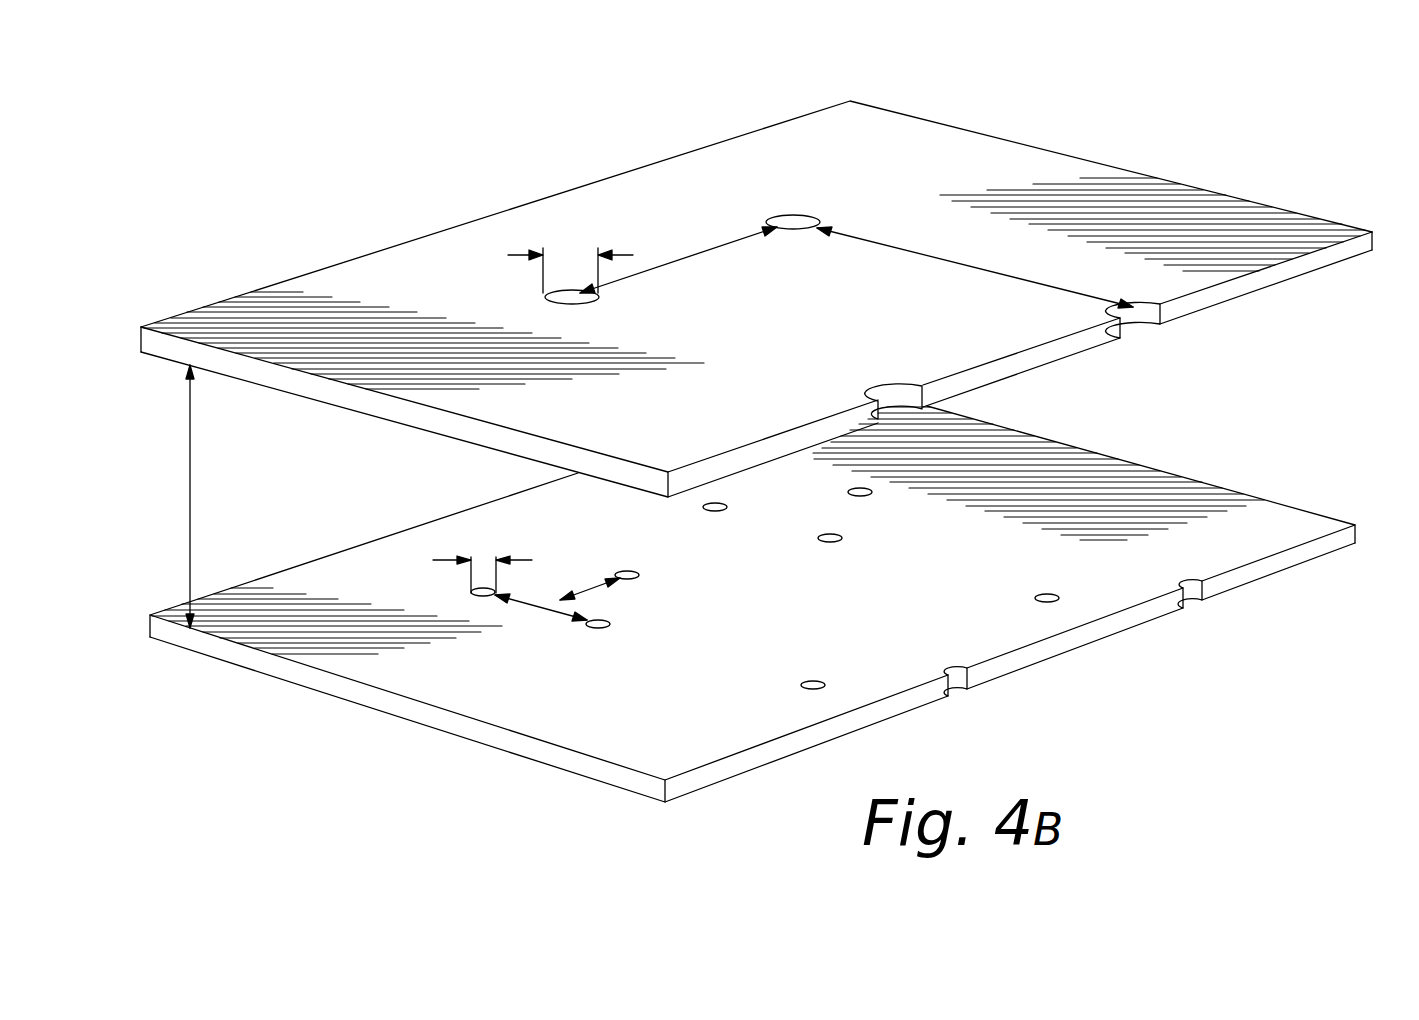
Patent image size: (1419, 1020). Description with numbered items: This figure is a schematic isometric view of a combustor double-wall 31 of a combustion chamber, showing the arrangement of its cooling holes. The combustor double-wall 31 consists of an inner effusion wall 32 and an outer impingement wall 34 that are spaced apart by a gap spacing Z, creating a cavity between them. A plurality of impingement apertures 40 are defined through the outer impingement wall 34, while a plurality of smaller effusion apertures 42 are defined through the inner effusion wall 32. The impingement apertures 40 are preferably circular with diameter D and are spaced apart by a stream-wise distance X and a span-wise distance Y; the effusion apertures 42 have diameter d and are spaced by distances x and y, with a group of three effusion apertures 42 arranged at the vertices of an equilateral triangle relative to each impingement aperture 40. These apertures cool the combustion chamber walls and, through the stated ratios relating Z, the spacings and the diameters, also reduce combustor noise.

The combustor double-wall 31 is at (408, 187).
The inner effusion wall 32 is at (1280, 562).
The outer impingement wall 34 is at (1277, 275).
The impingement apertures 40 is at (580, 302).
The effusion apertures 42 is at (857, 491).